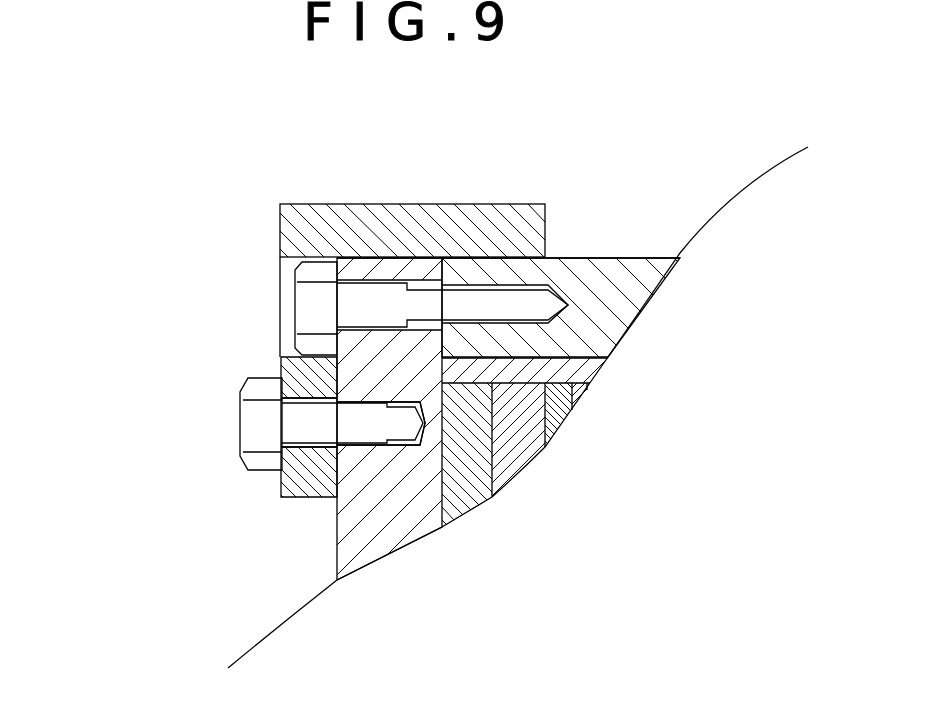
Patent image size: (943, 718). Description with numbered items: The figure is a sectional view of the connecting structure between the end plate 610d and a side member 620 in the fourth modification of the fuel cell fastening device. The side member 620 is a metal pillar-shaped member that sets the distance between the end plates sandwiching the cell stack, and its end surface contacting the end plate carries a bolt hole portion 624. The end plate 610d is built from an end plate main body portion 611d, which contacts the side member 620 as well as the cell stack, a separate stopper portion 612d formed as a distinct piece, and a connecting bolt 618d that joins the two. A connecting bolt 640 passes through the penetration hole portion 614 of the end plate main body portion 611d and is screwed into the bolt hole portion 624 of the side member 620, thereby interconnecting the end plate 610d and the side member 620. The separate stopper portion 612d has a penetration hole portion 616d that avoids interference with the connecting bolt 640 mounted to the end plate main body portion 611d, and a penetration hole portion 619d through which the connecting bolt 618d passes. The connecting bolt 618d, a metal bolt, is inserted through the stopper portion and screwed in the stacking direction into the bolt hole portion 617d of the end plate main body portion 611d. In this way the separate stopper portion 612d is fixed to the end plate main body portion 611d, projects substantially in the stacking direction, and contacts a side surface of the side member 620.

The penetration hole portion 614 is at (403, 292).
The penetration hole portion 616d is at (283, 262).
The connecting bolt 640 is at (295, 308).
The bolt hole portion 624 is at (564, 283).
The side member 620 is at (614, 256).
The connecting bolt 618d is at (240, 412).
The end plate 610d is at (255, 423).
The separate stopper portion 612d is at (280, 487).
The end plate main body portion 611d is at (348, 520).
The penetration hole portion 619d is at (358, 436).
The bolt hole portion 617d is at (418, 434).